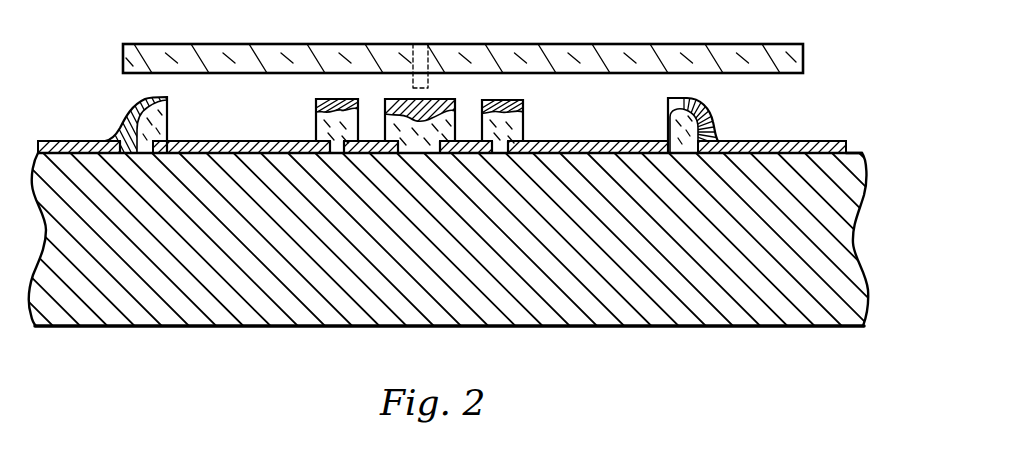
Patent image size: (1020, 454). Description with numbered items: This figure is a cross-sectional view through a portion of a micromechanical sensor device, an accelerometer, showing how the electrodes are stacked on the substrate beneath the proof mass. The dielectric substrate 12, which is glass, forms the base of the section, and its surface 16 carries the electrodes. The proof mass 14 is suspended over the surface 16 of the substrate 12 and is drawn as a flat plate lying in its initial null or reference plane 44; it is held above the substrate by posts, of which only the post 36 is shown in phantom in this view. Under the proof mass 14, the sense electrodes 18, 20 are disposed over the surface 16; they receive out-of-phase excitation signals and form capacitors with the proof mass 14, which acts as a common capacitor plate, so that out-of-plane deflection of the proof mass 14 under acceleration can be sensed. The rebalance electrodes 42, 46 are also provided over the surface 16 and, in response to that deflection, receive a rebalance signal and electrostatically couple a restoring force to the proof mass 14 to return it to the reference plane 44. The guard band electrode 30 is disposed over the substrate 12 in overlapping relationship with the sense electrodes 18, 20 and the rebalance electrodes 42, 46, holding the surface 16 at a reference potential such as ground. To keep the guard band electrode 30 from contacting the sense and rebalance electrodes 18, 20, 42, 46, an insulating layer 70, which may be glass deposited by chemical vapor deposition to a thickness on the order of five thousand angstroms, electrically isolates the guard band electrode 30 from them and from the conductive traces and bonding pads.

The dielectric substrate 12 is at (867, 192).
The proof mass 14 is at (572, 44).
The surface of the dielectric substrate 16 is at (855, 151).
The sense electrode 18 is at (205, 140).
The sense electrode 20 is at (562, 141).
The guard band electrode 30 is at (104, 140).
The post 36 is at (437, 97).
The rebalance electrode 42 is at (371, 156).
The reference plane 44 is at (511, 42).
The rebalance electrode 46 is at (477, 156).
The insulating layer 70 is at (667, 115).